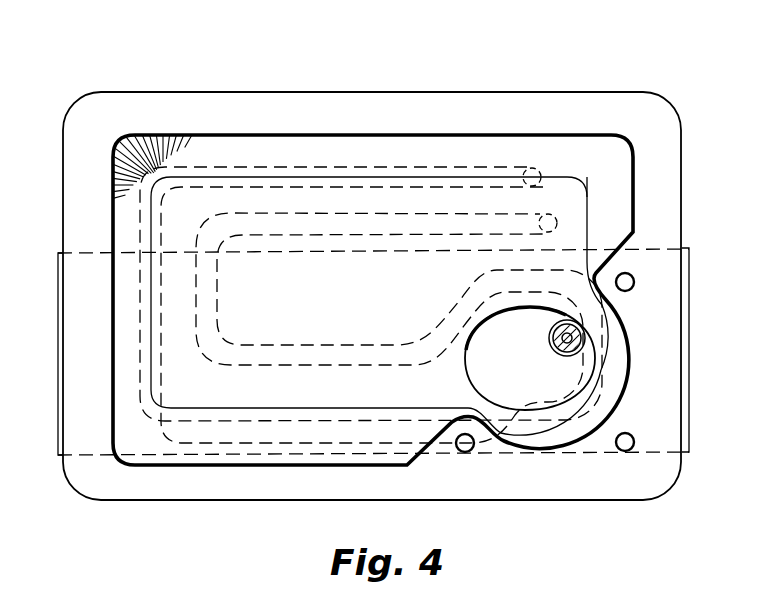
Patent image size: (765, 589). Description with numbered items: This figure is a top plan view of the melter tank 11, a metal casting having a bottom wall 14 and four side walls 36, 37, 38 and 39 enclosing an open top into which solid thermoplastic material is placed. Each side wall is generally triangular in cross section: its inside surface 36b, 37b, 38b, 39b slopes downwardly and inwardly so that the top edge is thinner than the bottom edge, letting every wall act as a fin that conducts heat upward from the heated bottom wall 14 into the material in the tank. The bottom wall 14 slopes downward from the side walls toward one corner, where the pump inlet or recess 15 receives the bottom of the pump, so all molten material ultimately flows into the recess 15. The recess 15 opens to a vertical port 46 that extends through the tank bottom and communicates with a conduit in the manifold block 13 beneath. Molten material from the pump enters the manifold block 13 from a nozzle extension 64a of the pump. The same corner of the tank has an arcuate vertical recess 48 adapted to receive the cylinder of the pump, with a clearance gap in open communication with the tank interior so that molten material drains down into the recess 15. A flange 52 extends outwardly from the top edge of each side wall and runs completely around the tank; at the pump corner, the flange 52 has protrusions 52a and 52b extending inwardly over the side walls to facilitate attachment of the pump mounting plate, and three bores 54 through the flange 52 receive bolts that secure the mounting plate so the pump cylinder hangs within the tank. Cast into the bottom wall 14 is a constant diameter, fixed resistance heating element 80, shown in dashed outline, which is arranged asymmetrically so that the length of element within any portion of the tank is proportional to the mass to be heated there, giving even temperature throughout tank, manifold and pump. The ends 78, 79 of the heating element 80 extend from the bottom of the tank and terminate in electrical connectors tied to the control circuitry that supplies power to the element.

The melter tank 11 is at (603, 63).
The manifold block 13 is at (690, 246).
The bottom wall 14 is at (322, 302).
The pump inlet or recess 15 is at (517, 385).
The side wall 36 is at (112, 240).
The inside surface 36b is at (119, 288).
The side wall 37 is at (350, 134).
The inside surface 37b is at (350, 153).
The side wall 38 is at (636, 183).
The inside surface 38b is at (618, 203).
The side wall 39 is at (326, 466).
The inside surface 39b is at (263, 450).
The vertical port 46 is at (563, 357).
The vertical recess 48 is at (634, 363).
The flange 52 is at (461, 108).
The protrusion 52a is at (632, 259).
The protrusion 52b is at (484, 436).
The bores 54 is at (634, 287).
The nozzle extension 64a is at (548, 338).
The end of heating element 78 is at (556, 216).
The end of heating element 79 is at (541, 170).
The heating element 80 is at (136, 337).